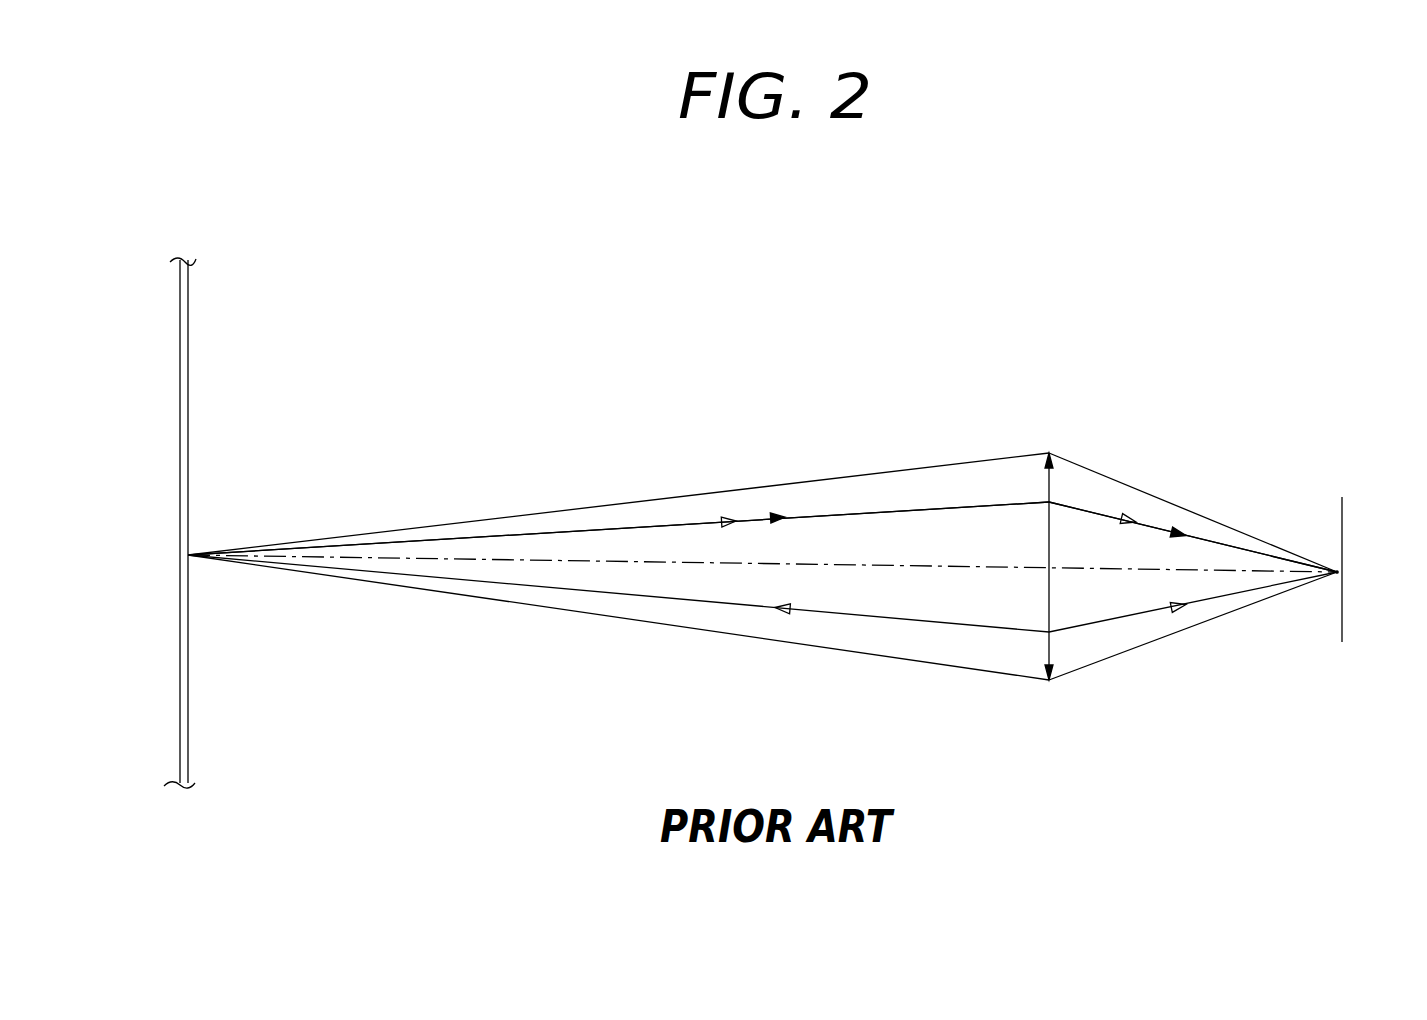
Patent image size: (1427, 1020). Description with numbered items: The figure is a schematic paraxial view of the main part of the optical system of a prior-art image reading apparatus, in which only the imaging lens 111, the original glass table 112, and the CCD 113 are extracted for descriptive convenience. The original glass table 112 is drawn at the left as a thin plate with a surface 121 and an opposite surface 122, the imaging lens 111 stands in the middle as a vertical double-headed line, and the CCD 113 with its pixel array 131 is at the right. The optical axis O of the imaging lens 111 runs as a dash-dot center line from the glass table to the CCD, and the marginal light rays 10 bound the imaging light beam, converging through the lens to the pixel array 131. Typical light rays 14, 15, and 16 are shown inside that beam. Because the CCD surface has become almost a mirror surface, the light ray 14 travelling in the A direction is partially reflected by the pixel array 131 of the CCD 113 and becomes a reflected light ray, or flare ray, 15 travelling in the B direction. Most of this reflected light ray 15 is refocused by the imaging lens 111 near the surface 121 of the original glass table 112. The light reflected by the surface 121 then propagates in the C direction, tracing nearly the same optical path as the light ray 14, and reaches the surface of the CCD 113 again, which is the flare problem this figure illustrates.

The marginal light rays 10 is at (940, 466).
The light ray 14 is at (817, 515).
The reflected light ray 15 is at (738, 604).
The light ray 16 is at (678, 525).
The imaging lens 111 is at (1050, 595).
The original glass table 112 is at (188, 491).
The CCD 113 is at (1345, 520).
The surface of the original glass table 121 is at (180, 300).
The panel rear surface 122 is at (190, 318).
The pixel array 131 is at (1337, 580).
The A direction A is at (780, 519).
The B direction B is at (800, 590).
The C direction C is at (730, 522).
The optical axis O is at (997, 566).